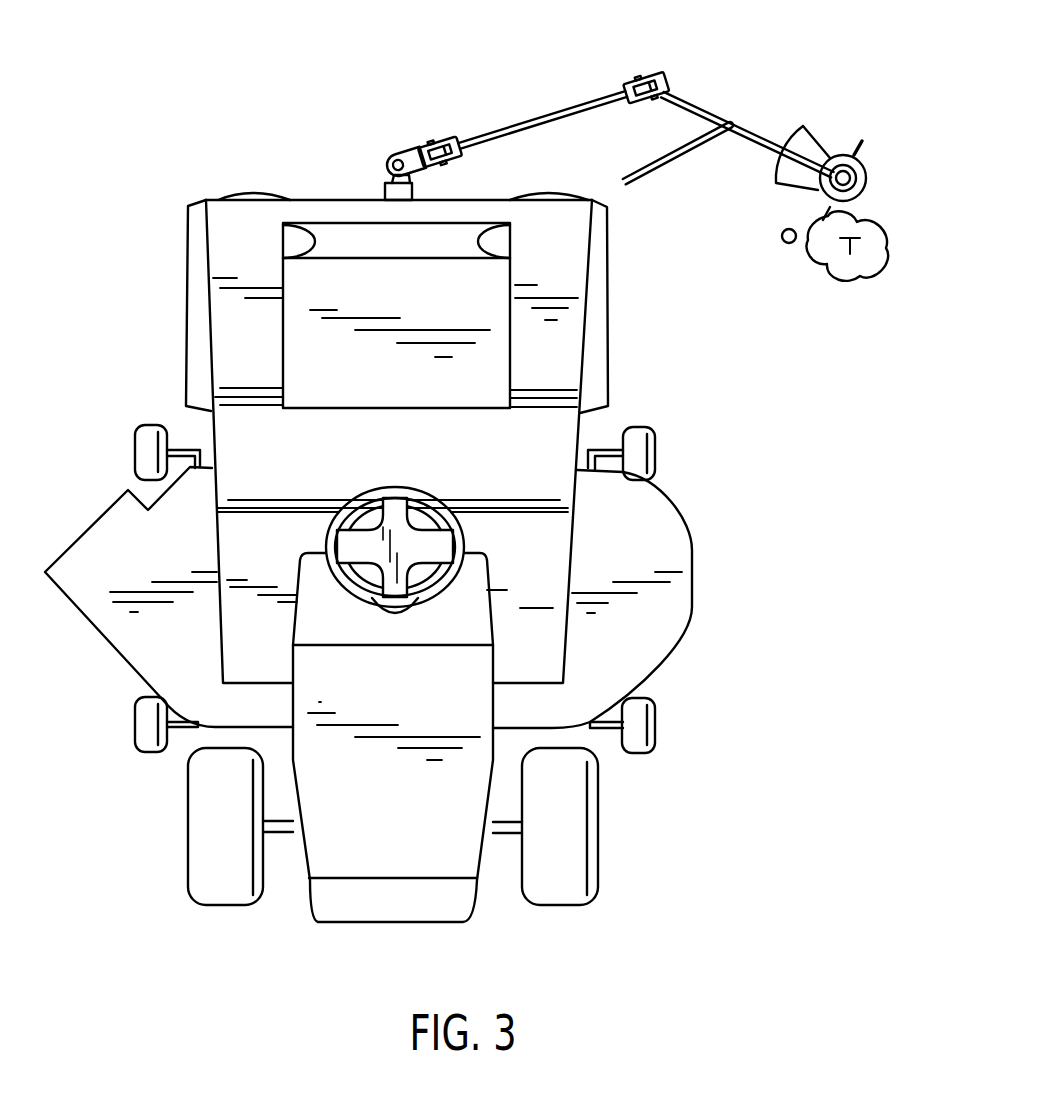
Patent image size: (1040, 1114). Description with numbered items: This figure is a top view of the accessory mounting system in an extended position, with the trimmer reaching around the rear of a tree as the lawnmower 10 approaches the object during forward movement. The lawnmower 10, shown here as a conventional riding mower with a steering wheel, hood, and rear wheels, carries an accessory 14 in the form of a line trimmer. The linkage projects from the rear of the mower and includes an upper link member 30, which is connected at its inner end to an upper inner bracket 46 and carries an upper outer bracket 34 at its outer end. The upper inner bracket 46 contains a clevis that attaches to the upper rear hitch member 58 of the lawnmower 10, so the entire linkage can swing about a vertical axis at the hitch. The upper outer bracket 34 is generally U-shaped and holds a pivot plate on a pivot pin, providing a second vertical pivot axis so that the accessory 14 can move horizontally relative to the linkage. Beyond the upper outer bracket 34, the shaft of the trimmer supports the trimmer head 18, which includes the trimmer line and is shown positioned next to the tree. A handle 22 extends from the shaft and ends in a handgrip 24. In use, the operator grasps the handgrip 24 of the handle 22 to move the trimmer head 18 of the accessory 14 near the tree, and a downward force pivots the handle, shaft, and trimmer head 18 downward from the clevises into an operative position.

The lawnmower 10 is at (684, 461).
The accessory 14 is at (771, 104).
The trimmer head 18 is at (871, 153).
The handle 22 is at (752, 182).
The handgrip 24 is at (783, 243).
The upper link member 30 is at (530, 117).
The upper outer bracket 34 is at (638, 76).
The upper inner bracket 46 is at (442, 138).
The upper rear hitch member 58 is at (383, 171).